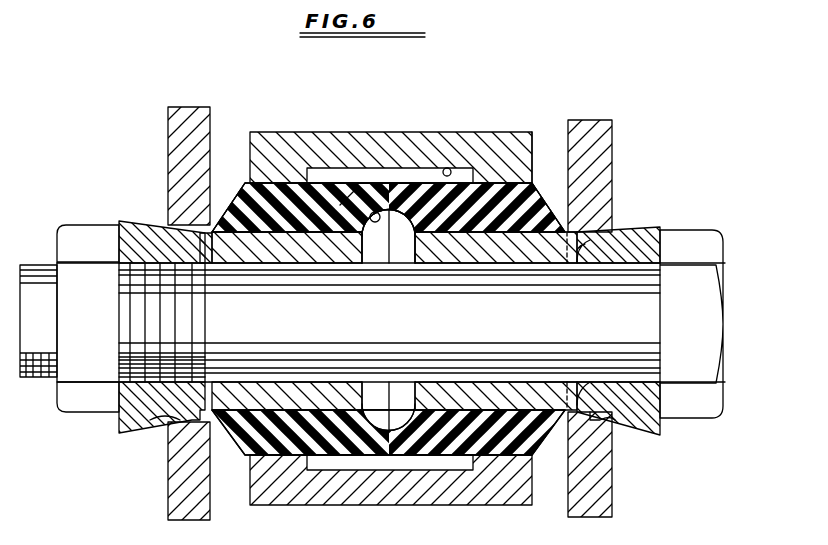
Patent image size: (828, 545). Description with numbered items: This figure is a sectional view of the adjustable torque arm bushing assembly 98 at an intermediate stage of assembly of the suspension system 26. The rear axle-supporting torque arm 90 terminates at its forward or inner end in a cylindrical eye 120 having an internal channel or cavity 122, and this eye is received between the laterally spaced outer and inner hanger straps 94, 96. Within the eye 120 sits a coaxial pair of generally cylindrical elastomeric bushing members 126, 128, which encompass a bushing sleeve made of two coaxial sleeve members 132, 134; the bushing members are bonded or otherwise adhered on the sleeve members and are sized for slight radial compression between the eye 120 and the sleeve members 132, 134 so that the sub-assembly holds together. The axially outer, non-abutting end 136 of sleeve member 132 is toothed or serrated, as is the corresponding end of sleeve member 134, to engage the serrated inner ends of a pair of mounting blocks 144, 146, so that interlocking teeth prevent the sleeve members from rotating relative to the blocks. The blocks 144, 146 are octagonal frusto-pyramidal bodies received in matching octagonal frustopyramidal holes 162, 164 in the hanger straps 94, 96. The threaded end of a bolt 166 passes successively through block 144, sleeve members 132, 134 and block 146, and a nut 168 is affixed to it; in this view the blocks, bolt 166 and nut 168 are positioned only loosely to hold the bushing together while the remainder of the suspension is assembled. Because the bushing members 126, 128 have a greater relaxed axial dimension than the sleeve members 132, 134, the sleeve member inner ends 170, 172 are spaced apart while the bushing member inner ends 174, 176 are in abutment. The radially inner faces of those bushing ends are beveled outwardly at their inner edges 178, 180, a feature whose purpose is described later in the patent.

The mounting structure 26 is at (152, 312).
The torque arm 90 is at (319, 129).
The outer hanger strap 94 is at (605, 142).
The inner hanger strap 96 is at (165, 129).
The adjustable bushing assembly 98 is at (452, 269).
The cylindrical eye 120 is at (533, 133).
The internal channel or cavity 122 is at (450, 170).
The elastomeric bushing member 126 is at (535, 203).
The elastomeric bushing member 128 is at (235, 210).
The sleeve member 132 is at (497, 259).
The sleeve member 134 is at (288, 258).
The axially outer end of sleeve member 136 is at (596, 265).
The mounting block 144 is at (668, 226).
The mounting block 146 is at (114, 216).
The octagonal frustopyramidal hole 162 is at (605, 422).
The octagonal frustopyramidal hole 164 is at (165, 424).
The bolt 166 is at (712, 318).
The nut 168 is at (65, 398).
The sleeve member inner end 170 is at (402, 268).
The sleeve member inner end 172 is at (372, 264).
The bushing member inner end 174 is at (397, 205).
The bushing member inner end 176 is at (357, 188).
The beveled inner edge 178 is at (412, 220).
The beveled inner edge 180 is at (373, 208).